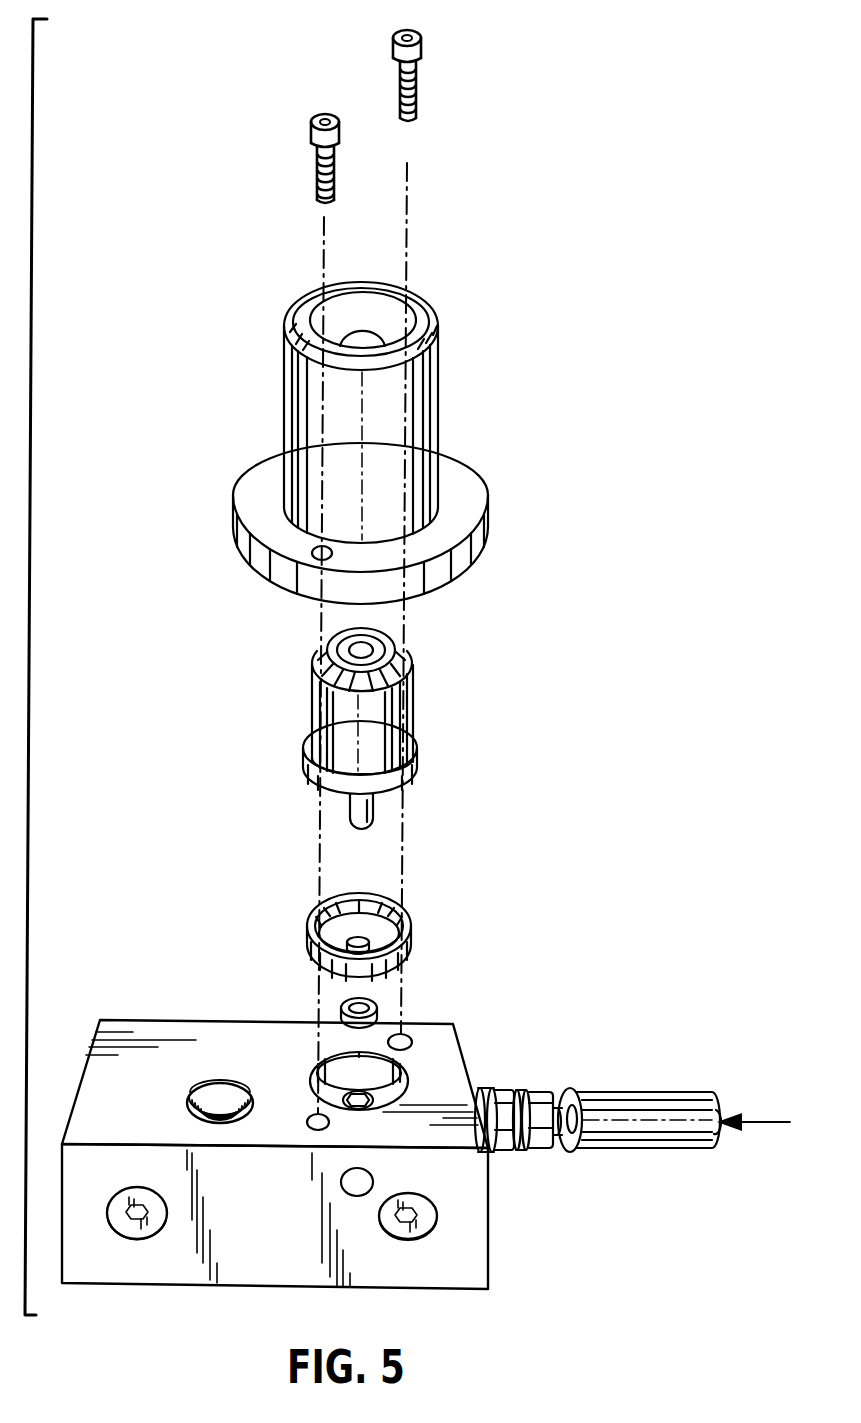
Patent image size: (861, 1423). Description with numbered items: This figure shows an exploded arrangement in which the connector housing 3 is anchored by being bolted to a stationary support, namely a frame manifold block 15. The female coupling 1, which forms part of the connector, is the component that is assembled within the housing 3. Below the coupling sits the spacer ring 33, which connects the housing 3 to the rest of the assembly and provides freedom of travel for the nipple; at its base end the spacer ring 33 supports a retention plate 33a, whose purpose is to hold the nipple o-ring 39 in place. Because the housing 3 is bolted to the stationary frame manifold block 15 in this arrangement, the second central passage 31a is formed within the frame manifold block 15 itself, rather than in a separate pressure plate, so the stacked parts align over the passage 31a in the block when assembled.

The female coupling 1 is at (424, 699).
The housing 3 is at (446, 395).
The frame manifold block 15 is at (223, 1033).
The second central passage 31a is at (374, 1090).
The spacer ring 33 is at (413, 920).
The retention plate 33a is at (373, 933).
The nipple o-ring 39 is at (386, 1008).